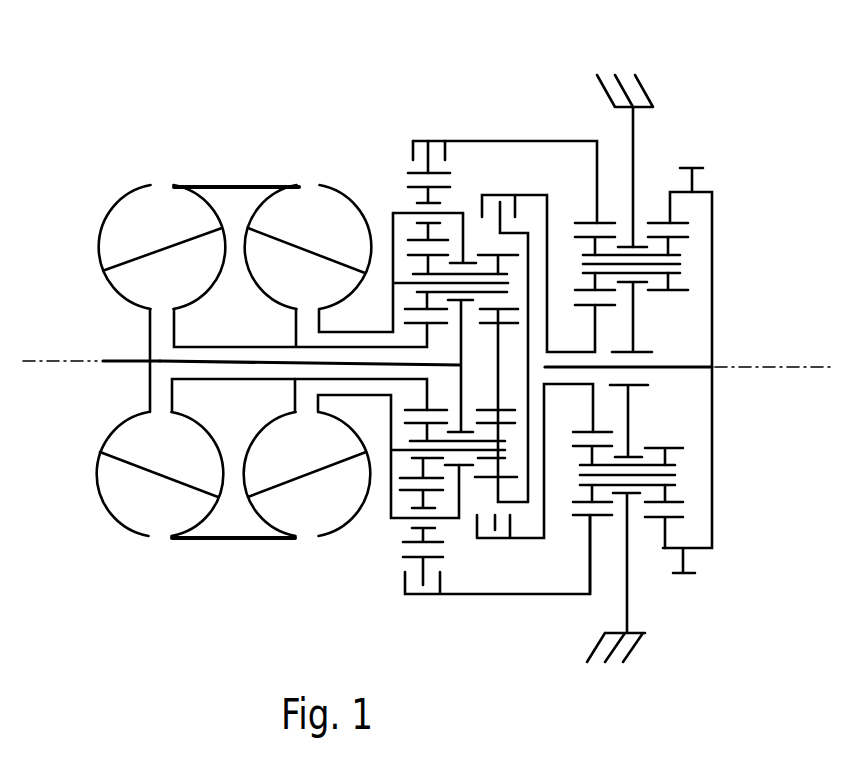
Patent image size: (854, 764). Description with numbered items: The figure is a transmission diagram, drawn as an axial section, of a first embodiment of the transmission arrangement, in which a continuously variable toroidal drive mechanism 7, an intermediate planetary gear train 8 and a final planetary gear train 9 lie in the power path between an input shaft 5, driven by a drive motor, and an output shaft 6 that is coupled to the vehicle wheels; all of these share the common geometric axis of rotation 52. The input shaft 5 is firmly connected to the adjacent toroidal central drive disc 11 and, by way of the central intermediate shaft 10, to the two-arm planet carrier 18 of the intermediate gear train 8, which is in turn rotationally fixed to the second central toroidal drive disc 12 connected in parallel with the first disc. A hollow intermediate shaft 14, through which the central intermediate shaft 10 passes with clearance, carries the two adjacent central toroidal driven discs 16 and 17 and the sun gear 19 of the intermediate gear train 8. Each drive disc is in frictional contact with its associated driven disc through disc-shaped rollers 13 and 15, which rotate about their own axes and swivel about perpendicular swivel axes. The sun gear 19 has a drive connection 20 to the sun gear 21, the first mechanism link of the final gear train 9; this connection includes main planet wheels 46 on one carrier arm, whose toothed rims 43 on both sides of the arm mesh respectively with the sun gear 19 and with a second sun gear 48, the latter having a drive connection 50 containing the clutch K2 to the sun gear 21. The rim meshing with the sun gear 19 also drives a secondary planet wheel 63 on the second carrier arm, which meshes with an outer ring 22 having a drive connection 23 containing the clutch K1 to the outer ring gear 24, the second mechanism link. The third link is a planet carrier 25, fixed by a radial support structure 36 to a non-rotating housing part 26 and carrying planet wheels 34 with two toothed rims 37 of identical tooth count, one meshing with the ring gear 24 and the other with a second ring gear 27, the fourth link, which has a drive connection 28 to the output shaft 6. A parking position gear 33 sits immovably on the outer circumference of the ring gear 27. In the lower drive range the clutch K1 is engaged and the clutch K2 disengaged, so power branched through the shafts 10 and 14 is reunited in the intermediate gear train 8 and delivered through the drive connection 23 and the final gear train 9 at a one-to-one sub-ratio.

The input shaft 5 is at (118, 357).
The output shaft 6 is at (724, 363).
The continuously variable toroidal drive mechanism 7 is at (237, 545).
The intermediate planetary gear train 8 is at (537, 601).
The final planetary gear train 9 is at (665, 613).
The central intermediate shaft 10 is at (166, 365).
The toroidal central drive disc 11 is at (128, 194).
The second central toroidal drive disc 12 is at (345, 195).
The roller 13 is at (183, 241).
The intermediate shaft 14 is at (208, 381).
The roller 15 is at (296, 245).
The central toroidal driven disc 16 is at (203, 185).
The central toroidal driven disc 17 is at (270, 186).
The two-arm planet carrier 18 is at (463, 204).
The sun gear 19 is at (405, 412).
The drive connection 20 is at (455, 322).
The sun gear 21 is at (609, 431).
The outer ring 22 is at (407, 168).
The drive connection 23 is at (585, 137).
The outer ring gear 24 is at (583, 219).
The planet carrier 25 is at (641, 158).
The non-rotating housing part 26 is at (627, 77).
The second ring gear 27 is at (686, 222).
The drive connection 28 is at (713, 402).
The parking position gear 33 is at (703, 166).
The planet wheel 34 is at (685, 262).
The radial support structure 36 is at (630, 440).
The toothed rim 37 is at (689, 238).
The toothed rim 43 is at (482, 481).
The main planet wheel 46 is at (416, 262).
The second sun gear 48 is at (505, 336).
The drive connection 50 is at (497, 548).
The axis of rotation 52 is at (28, 363).
The secondary planet wheel 63 is at (455, 178).
The clutch K1 is at (429, 138).
The clutch K2 is at (501, 188).